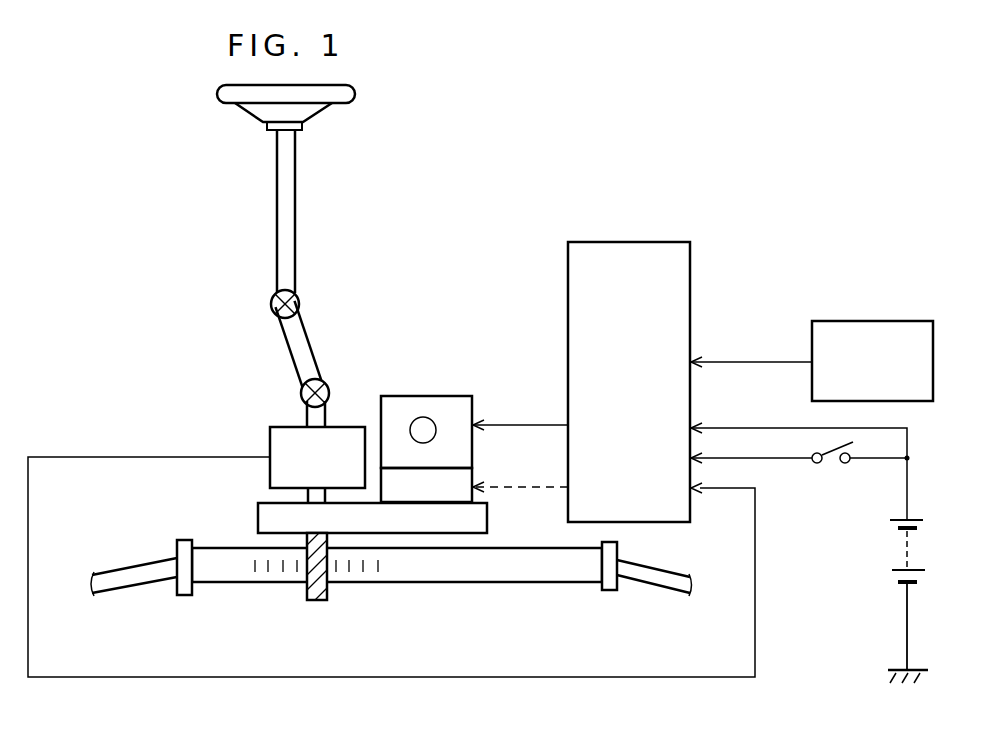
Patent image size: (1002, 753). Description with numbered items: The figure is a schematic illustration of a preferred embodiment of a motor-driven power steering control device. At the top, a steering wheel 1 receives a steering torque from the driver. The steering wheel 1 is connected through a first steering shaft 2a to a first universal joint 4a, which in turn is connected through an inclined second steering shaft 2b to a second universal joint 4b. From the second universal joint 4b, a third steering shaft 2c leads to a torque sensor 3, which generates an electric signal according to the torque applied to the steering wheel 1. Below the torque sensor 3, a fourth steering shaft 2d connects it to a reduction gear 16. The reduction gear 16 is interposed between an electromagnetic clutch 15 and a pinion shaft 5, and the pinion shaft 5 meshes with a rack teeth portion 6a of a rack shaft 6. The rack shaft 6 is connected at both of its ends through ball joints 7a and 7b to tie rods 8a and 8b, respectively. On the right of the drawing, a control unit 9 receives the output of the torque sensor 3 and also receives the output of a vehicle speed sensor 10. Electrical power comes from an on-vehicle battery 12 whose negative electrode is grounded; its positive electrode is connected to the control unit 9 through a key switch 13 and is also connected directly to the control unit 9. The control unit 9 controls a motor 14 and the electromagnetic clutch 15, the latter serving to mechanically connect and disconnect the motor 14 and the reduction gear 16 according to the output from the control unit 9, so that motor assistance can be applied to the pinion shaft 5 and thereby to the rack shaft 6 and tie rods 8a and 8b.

The steering wheel 1 is at (353, 92).
The first steering shaft 2a is at (276, 208).
The second steering shaft 2b is at (288, 345).
The third steering shaft 2c is at (307, 415).
The fourth steering shaft 2d is at (310, 497).
The torque sensor 3 is at (270, 474).
The first universal joint 4a is at (300, 301).
The second universal joint 4b is at (325, 388).
The pinion shaft 5 is at (311, 601).
The rack shaft 6 is at (500, 574).
The rack teeth portion 6a is at (370, 573).
The ball joint 7a is at (185, 597).
The ball joint 7b is at (606, 592).
The tie rod 8a is at (112, 591).
The tie rod 8b is at (672, 594).
The control unit 9 is at (630, 241).
The vehicle speed sensor 10 is at (860, 320).
The on-vehicle battery 12 is at (917, 548).
The key switch 13 is at (835, 465).
The motor 14 is at (438, 395).
The electromagnetic clutch 15 is at (472, 478).
The reduction gear 16 is at (488, 518).